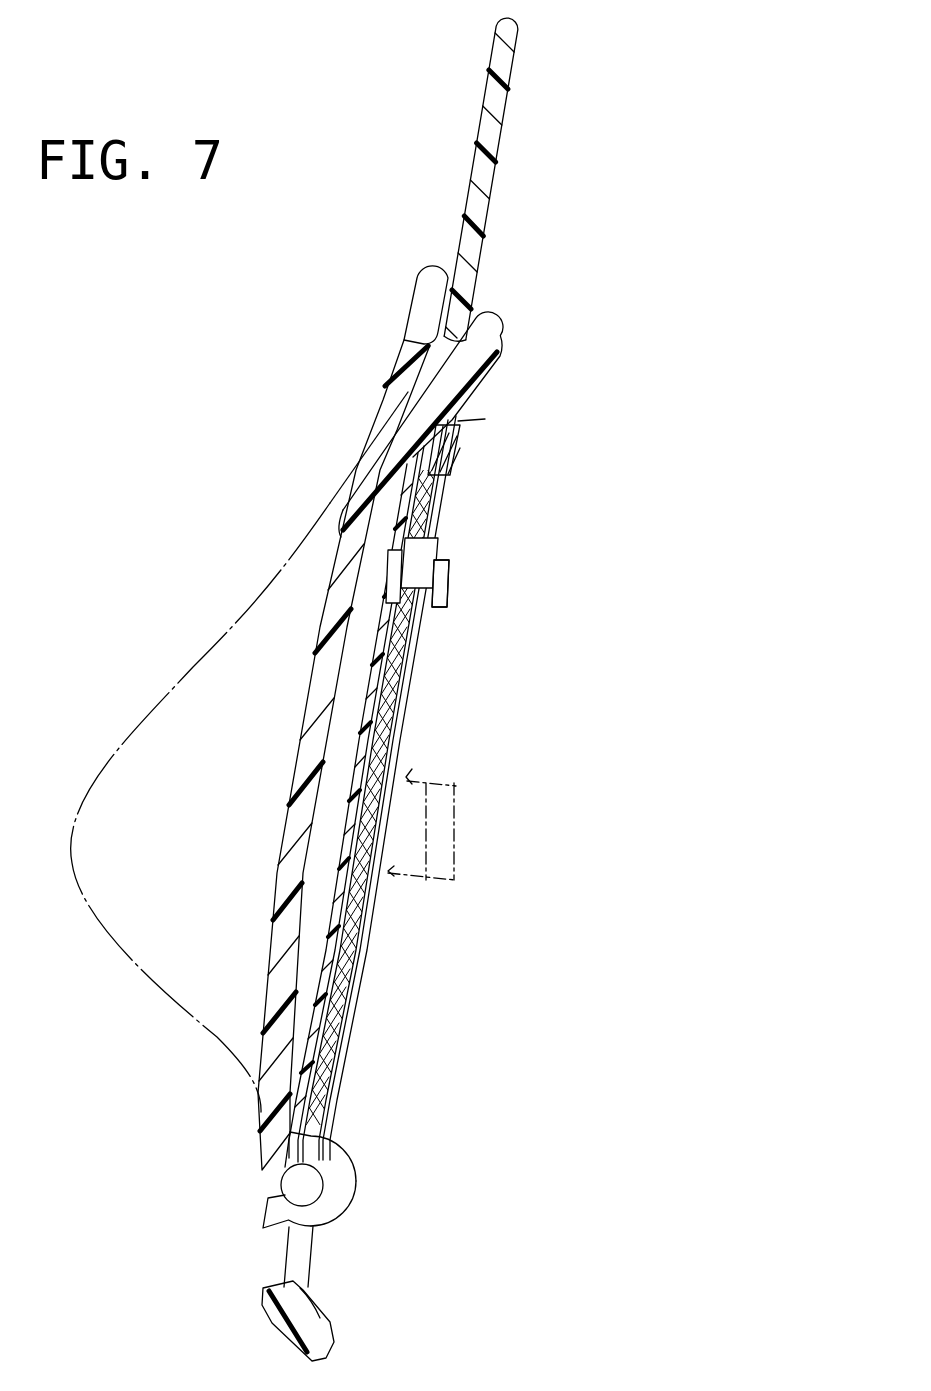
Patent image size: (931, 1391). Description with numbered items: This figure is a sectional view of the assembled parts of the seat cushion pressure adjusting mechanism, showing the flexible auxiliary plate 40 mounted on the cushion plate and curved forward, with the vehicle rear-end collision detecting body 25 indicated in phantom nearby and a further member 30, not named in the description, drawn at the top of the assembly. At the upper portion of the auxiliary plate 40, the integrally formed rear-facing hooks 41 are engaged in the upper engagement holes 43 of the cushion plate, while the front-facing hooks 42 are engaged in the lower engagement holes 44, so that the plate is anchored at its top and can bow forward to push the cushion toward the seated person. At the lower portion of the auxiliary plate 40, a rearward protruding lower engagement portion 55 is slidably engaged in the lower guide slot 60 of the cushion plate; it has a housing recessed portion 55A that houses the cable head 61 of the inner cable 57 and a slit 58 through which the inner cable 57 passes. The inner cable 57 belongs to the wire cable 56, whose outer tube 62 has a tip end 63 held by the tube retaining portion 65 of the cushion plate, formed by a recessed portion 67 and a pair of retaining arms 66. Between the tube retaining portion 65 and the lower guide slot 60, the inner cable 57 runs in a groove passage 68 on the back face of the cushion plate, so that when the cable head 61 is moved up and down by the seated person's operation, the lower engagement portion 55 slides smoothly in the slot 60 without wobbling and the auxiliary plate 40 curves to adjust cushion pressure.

The vehicle rear-end collision detecting body 25 is at (458, 788).
The rod 30 is at (502, 157).
The auxiliary plate 40 is at (314, 633).
The rear-facing hooks 41 is at (418, 280).
The front-facing hooks 42 is at (503, 316).
The upper engagement holes 43 is at (460, 268).
The lower engagement holes 44 is at (453, 427).
The lower engagement portion 55 is at (353, 1205).
The housing recessed portion 55A is at (350, 1168).
The wire cable 56 is at (400, 717).
The inner cable 57 is at (340, 963).
The slit 58 is at (330, 1157).
The lower guide slot 60 is at (340, 1042).
The cable head 61 is at (295, 1185).
The outer tube 62 is at (423, 555).
The tip end 63 is at (398, 600).
The tube retaining portion 65 is at (449, 580).
The retaining arms 66 is at (440, 583).
The recessed portion 67 is at (387, 575).
The groove passage 68 is at (375, 750).